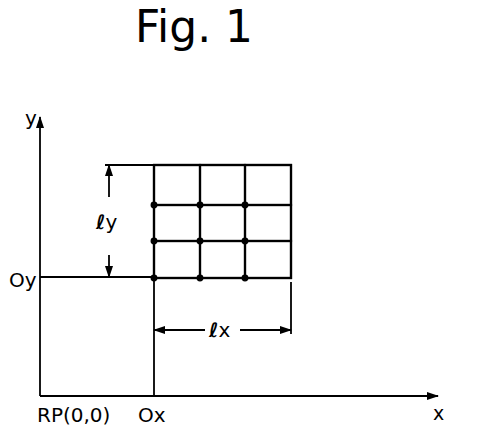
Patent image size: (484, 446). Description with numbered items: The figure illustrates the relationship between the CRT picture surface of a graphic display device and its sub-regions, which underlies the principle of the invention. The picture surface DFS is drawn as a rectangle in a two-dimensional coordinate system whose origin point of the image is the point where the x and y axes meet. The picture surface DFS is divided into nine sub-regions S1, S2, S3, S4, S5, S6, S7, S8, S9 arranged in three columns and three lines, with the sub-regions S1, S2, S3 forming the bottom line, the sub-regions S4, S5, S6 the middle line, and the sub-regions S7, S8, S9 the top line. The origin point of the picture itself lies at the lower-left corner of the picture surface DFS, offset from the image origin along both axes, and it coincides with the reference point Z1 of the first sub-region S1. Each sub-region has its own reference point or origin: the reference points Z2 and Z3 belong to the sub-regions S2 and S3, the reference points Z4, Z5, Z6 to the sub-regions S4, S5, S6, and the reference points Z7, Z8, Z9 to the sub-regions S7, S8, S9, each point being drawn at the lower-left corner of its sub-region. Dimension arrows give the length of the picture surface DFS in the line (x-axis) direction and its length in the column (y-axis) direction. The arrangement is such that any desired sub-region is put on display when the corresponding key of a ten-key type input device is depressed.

The picture surface DFS is at (291, 183).
The sub-region S1 is at (177, 260).
The sub-region S2 is at (222, 260).
The sub-region S3 is at (268, 260).
The sub-region S4 is at (177, 224).
The sub-region S5 is at (222, 224).
The sub-region S6 is at (268, 224).
The sub-region S7 is at (177, 185).
The sub-region S8 is at (222, 185).
The sub-region S9 is at (268, 185).
The reference point of sub-region Z1 is at (150, 295).
The reference point of sub-region Z2 is at (210, 286).
The reference point of sub-region Z3 is at (255, 286).
The reference point of sub-region Z4 is at (142, 251).
The reference point of sub-region Z5 is at (211, 249).
The reference point of sub-region Z6 is at (256, 249).
The reference point of sub-region Z7 is at (142, 214).
The reference point of sub-region Z8 is at (211, 213).
The reference point of sub-region Z9 is at (256, 213).